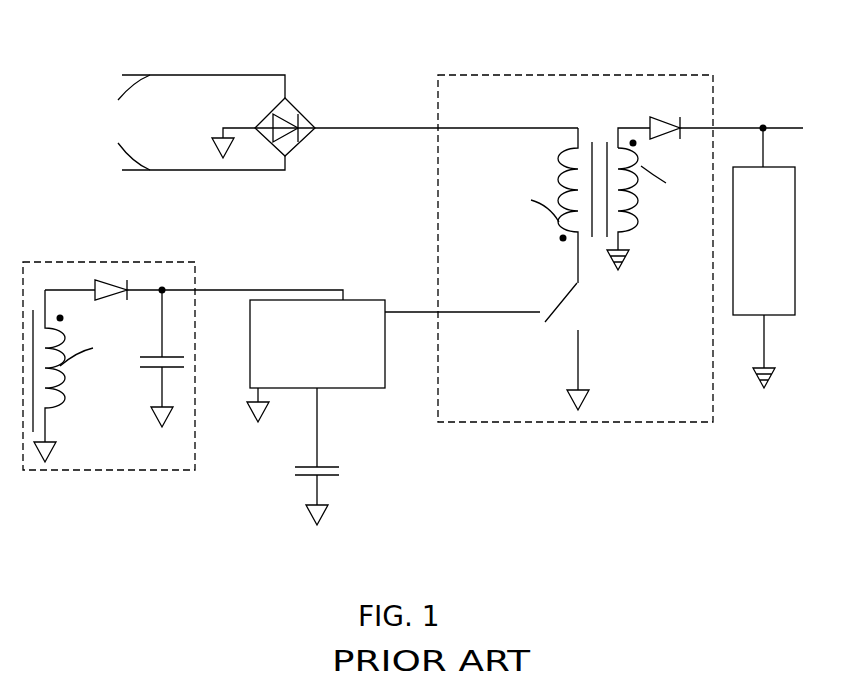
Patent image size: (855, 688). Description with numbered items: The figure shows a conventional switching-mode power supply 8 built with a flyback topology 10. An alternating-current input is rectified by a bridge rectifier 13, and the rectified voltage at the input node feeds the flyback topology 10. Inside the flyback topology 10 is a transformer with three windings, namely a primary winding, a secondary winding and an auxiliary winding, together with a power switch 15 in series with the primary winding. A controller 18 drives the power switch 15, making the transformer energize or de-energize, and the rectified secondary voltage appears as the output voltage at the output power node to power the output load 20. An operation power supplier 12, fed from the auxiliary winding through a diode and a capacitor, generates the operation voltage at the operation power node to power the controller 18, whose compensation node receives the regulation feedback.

The switching-mode power supply 8 is at (414, 59).
The bridge rectifier 13 is at (275, 108).
The flyback topology 10 is at (518, 75).
The power switch 15 is at (580, 307).
The output load 20 is at (778, 246).
The controller 18 is at (331, 359).
The operation power supplier 12 is at (110, 470).